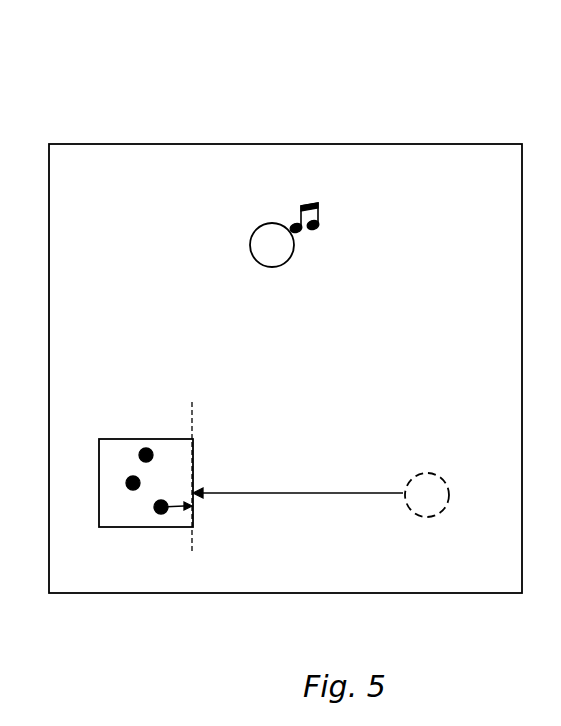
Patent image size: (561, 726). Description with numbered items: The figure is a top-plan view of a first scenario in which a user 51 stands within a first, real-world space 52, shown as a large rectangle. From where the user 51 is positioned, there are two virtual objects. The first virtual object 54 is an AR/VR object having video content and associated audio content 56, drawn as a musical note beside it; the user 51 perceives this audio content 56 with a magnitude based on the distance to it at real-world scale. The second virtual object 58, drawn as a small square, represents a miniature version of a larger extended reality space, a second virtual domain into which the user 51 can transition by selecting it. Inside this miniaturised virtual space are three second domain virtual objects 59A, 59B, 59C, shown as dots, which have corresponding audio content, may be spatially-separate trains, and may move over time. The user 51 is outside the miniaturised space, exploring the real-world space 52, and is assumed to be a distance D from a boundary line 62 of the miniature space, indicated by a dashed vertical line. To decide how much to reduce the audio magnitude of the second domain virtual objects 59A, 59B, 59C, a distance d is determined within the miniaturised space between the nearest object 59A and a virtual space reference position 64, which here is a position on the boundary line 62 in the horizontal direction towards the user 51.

The user 51 is at (321, 490).
The real-world space 52 is at (397, 144).
The first virtual object 54 is at (272, 245).
The audio content 56 is at (316, 205).
The second virtual object 58 is at (180, 560).
The second domain virtual object 59A is at (157, 513).
The second domain virtual object 59B is at (128, 487).
The second domain virtual object 59C is at (140, 452).
The boundary line 62 is at (196, 432).
The virtual space reference position 64 is at (195, 503).